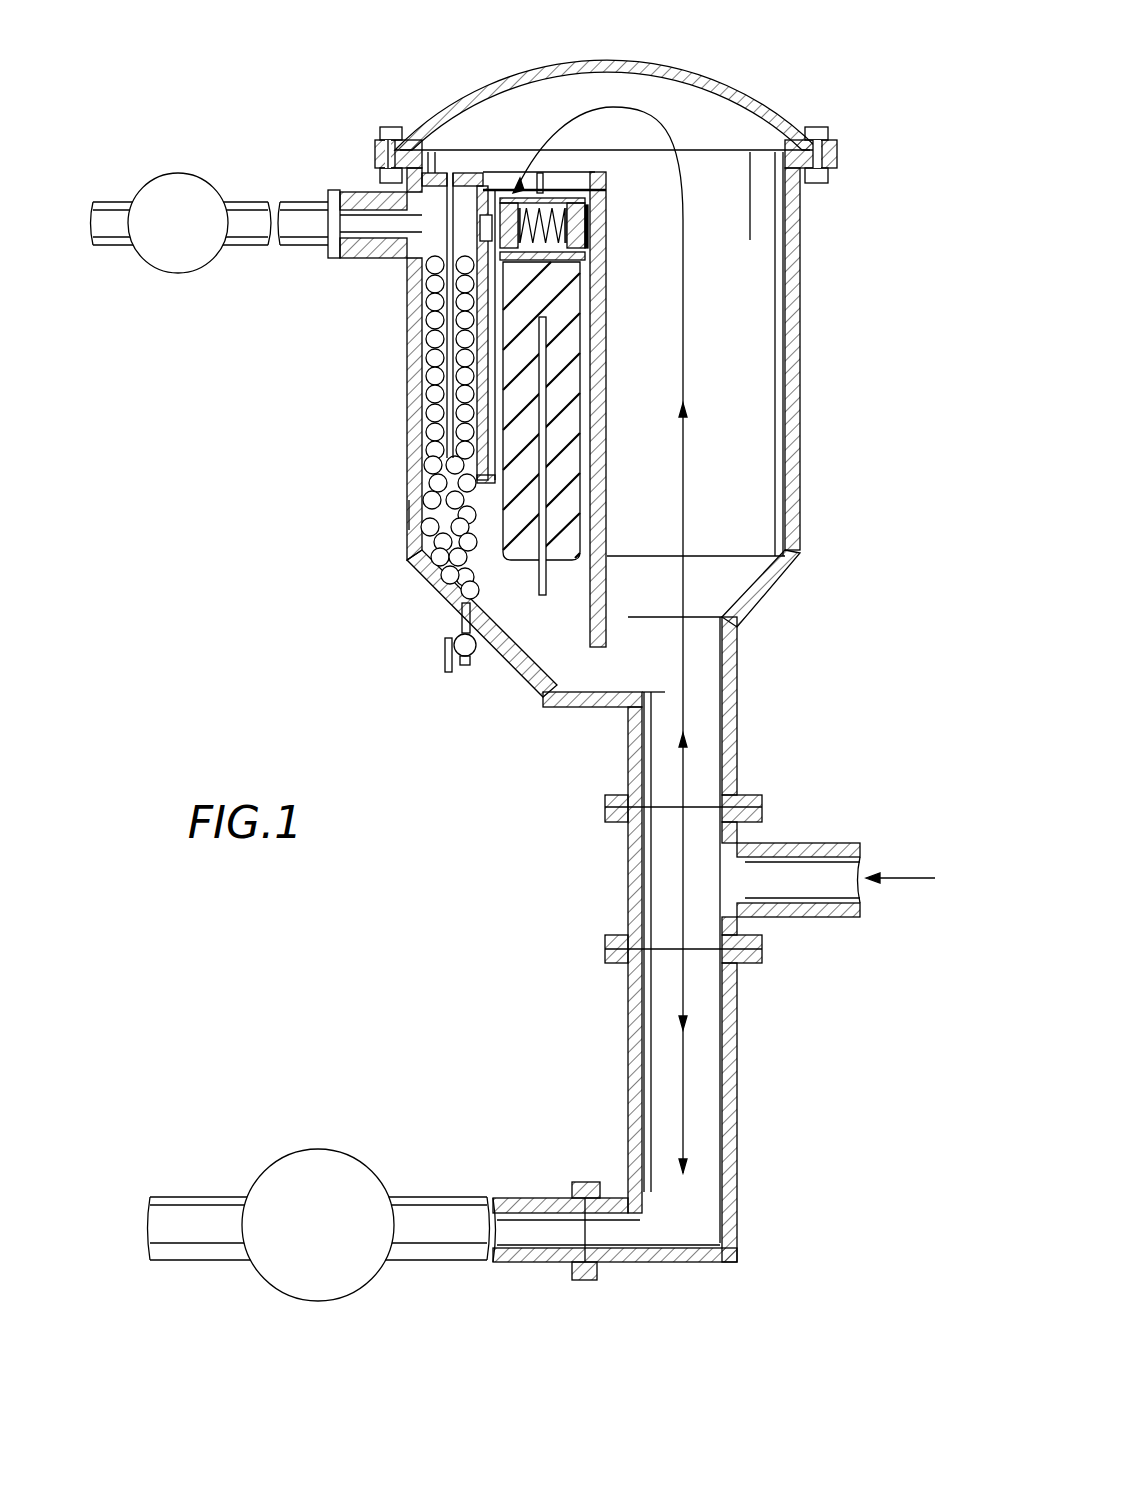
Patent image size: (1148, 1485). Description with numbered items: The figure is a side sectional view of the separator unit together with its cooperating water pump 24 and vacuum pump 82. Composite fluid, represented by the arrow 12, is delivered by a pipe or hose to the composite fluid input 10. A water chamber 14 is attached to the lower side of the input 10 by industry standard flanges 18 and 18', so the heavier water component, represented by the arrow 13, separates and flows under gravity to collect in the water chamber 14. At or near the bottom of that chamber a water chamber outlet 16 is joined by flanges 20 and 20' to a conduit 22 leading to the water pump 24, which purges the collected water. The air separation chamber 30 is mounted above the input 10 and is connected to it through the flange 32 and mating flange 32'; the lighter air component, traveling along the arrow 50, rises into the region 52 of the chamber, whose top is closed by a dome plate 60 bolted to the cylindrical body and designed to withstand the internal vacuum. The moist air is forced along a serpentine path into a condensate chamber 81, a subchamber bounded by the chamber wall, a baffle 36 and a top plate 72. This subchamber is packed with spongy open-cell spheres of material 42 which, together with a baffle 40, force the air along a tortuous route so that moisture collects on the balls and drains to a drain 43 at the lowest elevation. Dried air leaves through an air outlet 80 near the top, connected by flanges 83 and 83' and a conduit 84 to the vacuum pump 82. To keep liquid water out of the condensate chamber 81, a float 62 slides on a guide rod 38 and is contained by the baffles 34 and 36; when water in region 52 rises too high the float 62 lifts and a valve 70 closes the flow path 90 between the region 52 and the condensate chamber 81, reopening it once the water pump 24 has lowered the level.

The composite fluid input 10 is at (826, 845).
The arrow 12 is at (900, 880).
The arrow 13 is at (683, 1123).
The water chamber 14 is at (745, 1080).
The water chamber outlet 16 is at (640, 1262).
The flange 18 is at (723, 942).
The flange 18' is at (723, 964).
The flange 20 is at (582, 1140).
The flange 20' is at (556, 1204).
The conduit 22 is at (440, 1197).
The water pump 24 is at (318, 1148).
The air separation chamber 30 is at (801, 314).
The flange 32 is at (723, 782).
The flange 32' is at (572, 815).
The baffle 34 is at (593, 647).
The baffle 36 is at (420, 557).
The guide rod 38 is at (540, 593).
The baffle 40 is at (420, 448).
The material 42 is at (410, 427).
The drain 43 is at (445, 645).
The arrow 50 is at (685, 360).
The region 52 is at (750, 437).
The dome plate 60 is at (502, 78).
The float 62 is at (565, 345).
The valve 70 is at (586, 225).
The top plate 72 is at (410, 243).
The air outlet 80 is at (365, 200).
The condensate chamber 81 is at (420, 513).
The vacuum pump 82 is at (170, 273).
The flange 83 is at (364, 290).
The flange 83' is at (296, 260).
The conduit 84 is at (250, 247).
The flow path 90 is at (470, 228).